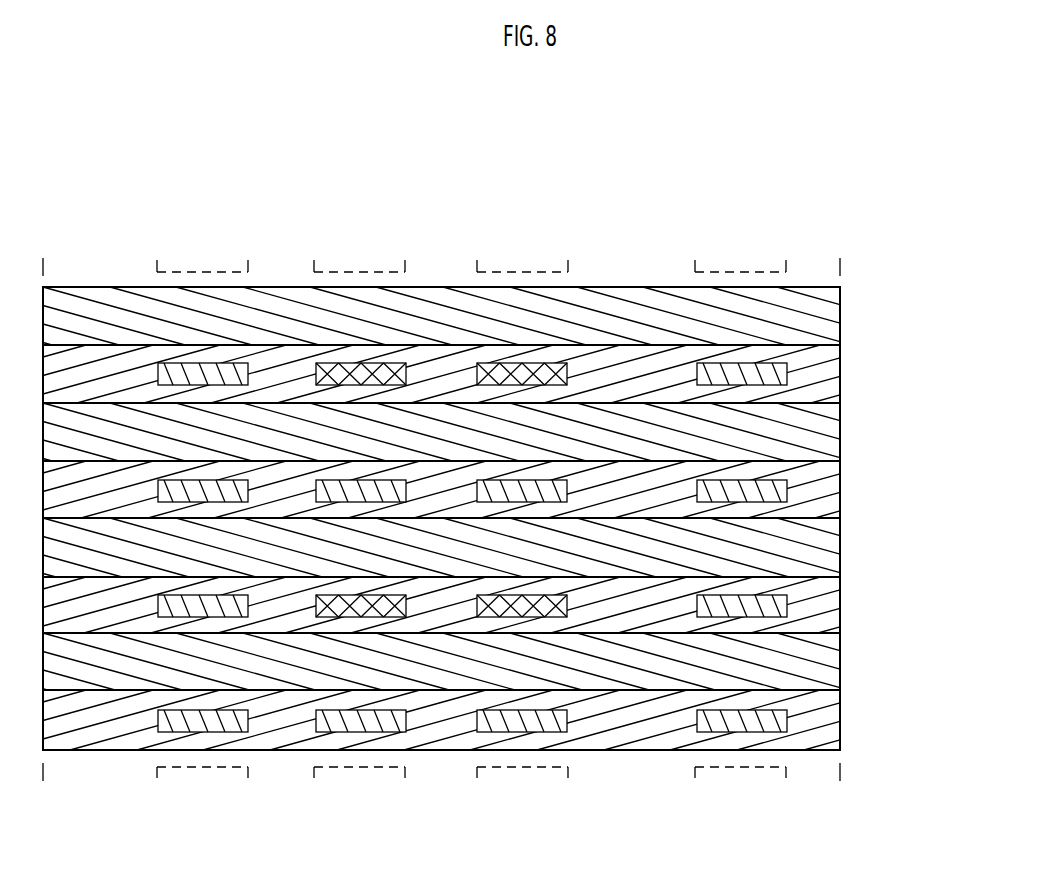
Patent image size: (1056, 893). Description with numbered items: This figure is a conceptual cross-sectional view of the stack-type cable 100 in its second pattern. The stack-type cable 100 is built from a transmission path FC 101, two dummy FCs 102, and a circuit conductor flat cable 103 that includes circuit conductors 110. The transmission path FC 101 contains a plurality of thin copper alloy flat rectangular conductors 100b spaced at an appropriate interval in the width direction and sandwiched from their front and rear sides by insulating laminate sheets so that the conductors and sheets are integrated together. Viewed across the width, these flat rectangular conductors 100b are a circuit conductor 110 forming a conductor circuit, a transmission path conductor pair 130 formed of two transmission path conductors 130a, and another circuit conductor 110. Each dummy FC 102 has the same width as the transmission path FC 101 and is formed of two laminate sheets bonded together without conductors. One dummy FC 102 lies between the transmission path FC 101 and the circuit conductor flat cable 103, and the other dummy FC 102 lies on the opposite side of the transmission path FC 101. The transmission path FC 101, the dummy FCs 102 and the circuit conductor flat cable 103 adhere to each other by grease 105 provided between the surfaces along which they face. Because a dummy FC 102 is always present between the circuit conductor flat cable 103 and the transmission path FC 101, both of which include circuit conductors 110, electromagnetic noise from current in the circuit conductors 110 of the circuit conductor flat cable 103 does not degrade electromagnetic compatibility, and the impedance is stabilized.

The stack-type cable 100 is at (937, 295).
The flat rectangular conductors 100b is at (441, 507).
The transmission path FC 101 is at (841, 377).
The dummy FC 102 is at (841, 313).
The circuit conductor flat cable 103 is at (841, 487).
The grease 105 is at (841, 355).
The circuit conductor 110 is at (183, 378).
The transmission path conductor pair 130 is at (607, 200).
The transmission path conductors 130a is at (340, 362).